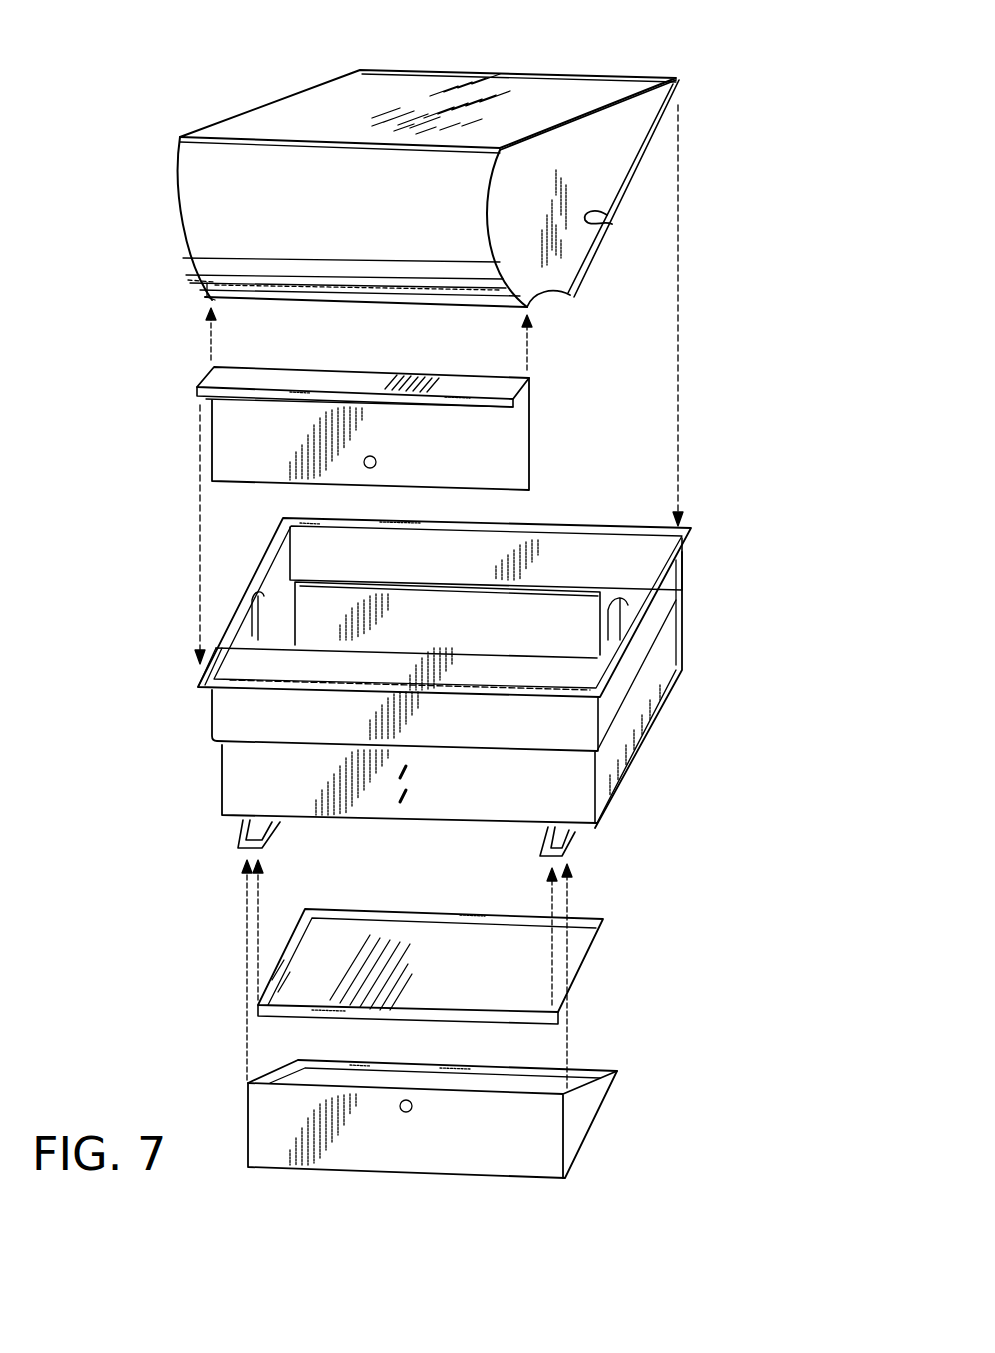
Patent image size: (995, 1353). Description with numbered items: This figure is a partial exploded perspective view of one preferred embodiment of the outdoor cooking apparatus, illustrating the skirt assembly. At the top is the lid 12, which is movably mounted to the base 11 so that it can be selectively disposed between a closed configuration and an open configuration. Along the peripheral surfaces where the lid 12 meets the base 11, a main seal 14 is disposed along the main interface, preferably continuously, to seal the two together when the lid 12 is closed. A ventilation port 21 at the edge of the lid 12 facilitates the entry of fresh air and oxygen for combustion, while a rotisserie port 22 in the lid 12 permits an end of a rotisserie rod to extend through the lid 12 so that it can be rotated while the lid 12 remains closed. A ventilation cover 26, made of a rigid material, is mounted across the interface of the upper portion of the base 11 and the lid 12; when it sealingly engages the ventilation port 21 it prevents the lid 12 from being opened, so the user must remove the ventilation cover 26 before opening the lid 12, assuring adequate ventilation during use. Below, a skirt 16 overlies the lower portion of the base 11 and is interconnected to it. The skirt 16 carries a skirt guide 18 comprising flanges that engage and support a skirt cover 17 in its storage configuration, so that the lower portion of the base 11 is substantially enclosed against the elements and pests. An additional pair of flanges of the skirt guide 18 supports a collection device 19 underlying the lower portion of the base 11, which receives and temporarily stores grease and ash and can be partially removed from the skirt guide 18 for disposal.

The base 11 is at (459, 637).
The lid 12 is at (672, 82).
The main seal 14 is at (604, 528).
The skirt 16 is at (680, 664).
The skirt cover 17 is at (603, 1110).
The skirt guide 18 is at (268, 842).
The collection device 19 is at (590, 955).
The ventilation port 21 is at (207, 290).
The rotisserie port 22 is at (612, 222).
The ventilation cover 26 is at (530, 412).